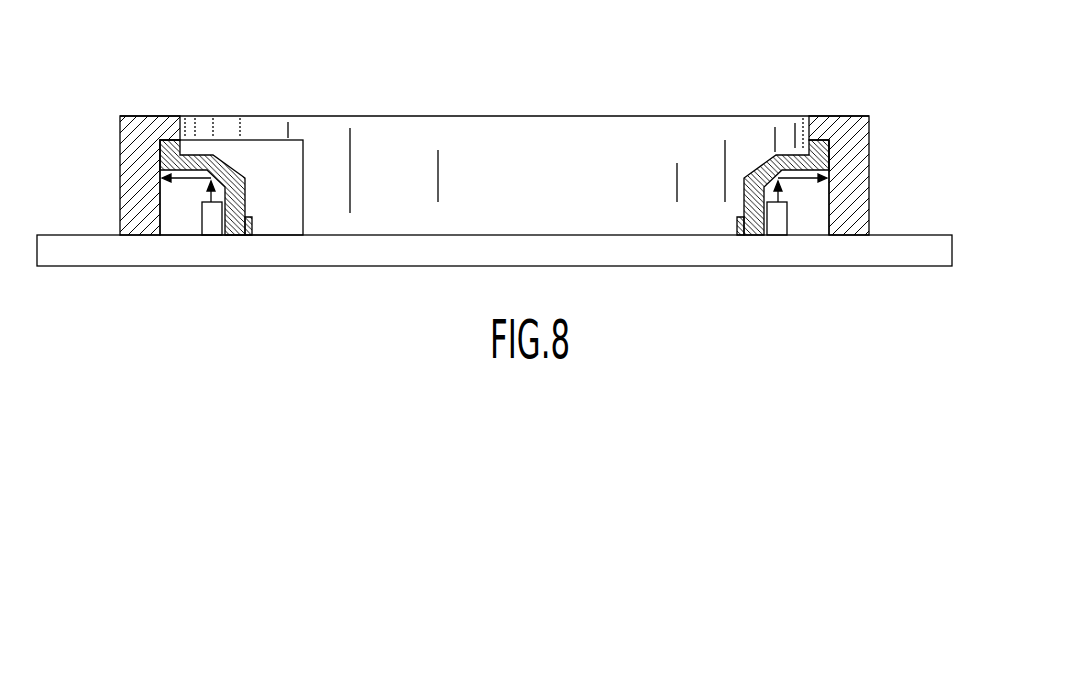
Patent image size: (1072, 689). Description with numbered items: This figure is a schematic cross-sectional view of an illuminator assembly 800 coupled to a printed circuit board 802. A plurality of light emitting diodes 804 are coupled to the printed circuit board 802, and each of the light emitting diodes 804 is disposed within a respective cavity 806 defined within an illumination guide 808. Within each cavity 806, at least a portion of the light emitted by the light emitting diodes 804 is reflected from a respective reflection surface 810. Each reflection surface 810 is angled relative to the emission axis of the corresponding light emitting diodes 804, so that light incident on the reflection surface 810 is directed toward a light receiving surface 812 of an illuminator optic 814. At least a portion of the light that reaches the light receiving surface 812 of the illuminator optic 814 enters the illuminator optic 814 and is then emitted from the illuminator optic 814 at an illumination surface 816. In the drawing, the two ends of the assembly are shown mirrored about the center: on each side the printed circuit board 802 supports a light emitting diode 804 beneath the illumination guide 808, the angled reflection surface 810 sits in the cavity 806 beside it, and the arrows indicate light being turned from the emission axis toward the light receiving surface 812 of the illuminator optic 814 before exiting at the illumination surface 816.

The illuminator assembly 800 is at (152, 72).
The printed circuit board 802 is at (918, 250).
The light emitting diodes 804 is at (212, 225).
The cavity 806 is at (183, 222).
The illumination guide 808 is at (212, 157).
The reflection surface 810 is at (768, 197).
The light receiving surface 812 is at (832, 207).
The illuminator optic 814 is at (870, 140).
The illumination surface 816 is at (818, 95).